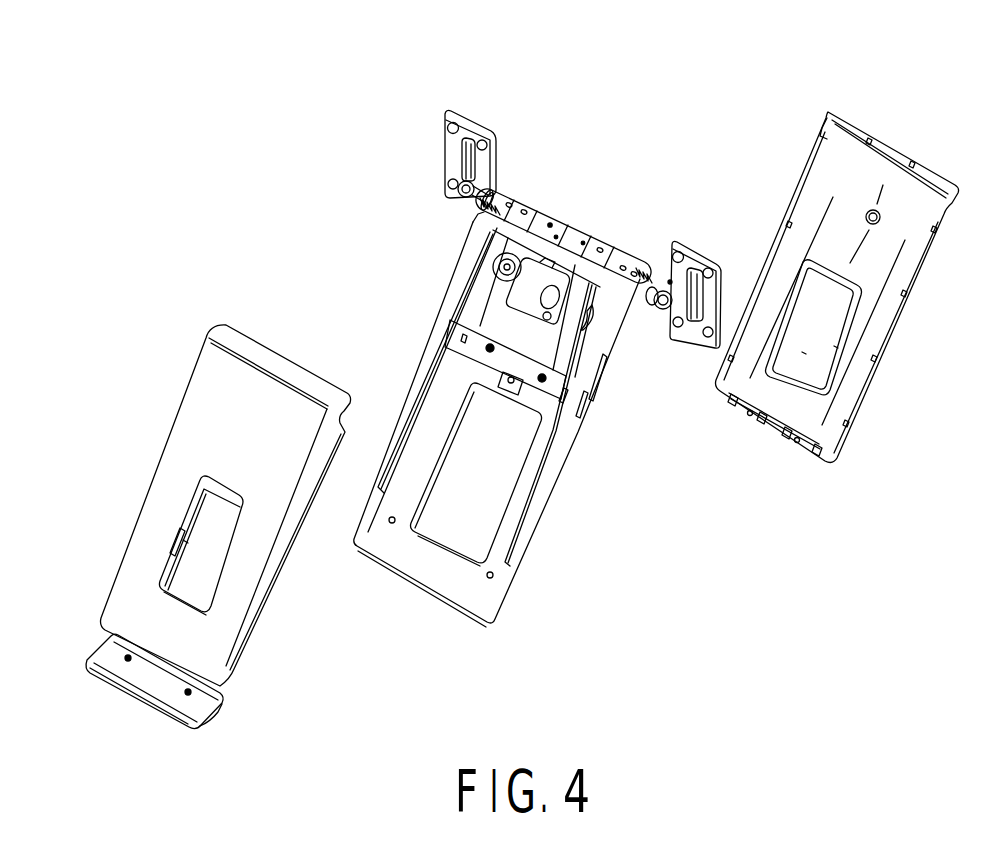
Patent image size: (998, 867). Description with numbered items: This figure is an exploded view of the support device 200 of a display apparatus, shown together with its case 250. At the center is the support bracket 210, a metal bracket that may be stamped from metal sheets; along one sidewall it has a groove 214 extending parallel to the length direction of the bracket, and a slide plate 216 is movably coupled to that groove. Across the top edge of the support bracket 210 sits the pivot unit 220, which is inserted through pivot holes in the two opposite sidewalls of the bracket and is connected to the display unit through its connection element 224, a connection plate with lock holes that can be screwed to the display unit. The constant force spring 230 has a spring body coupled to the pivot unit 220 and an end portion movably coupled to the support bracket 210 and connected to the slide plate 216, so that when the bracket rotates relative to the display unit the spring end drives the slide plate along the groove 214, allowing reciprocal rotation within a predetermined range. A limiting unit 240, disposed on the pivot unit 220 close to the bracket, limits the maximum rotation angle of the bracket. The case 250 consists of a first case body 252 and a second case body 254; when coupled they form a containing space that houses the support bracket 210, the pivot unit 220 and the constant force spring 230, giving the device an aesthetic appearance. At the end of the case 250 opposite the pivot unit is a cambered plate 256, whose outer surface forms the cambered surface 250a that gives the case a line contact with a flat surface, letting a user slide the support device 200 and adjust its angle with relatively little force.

The support device 200 is at (373, 209).
The support bracket 210 is at (472, 592).
The groove 214 is at (606, 368).
The slide plate 216 is at (455, 337).
The pivot unit 220 is at (497, 192).
The connection element 224 is at (467, 135).
The constant force spring 230 is at (566, 356).
The limiting unit 240 is at (648, 283).
The case 250 is at (624, 23).
The cambered surface 250a is at (213, 717).
The first case body 252 is at (212, 373).
The second case body 254 is at (827, 117).
The cambered plate 256 is at (168, 698).